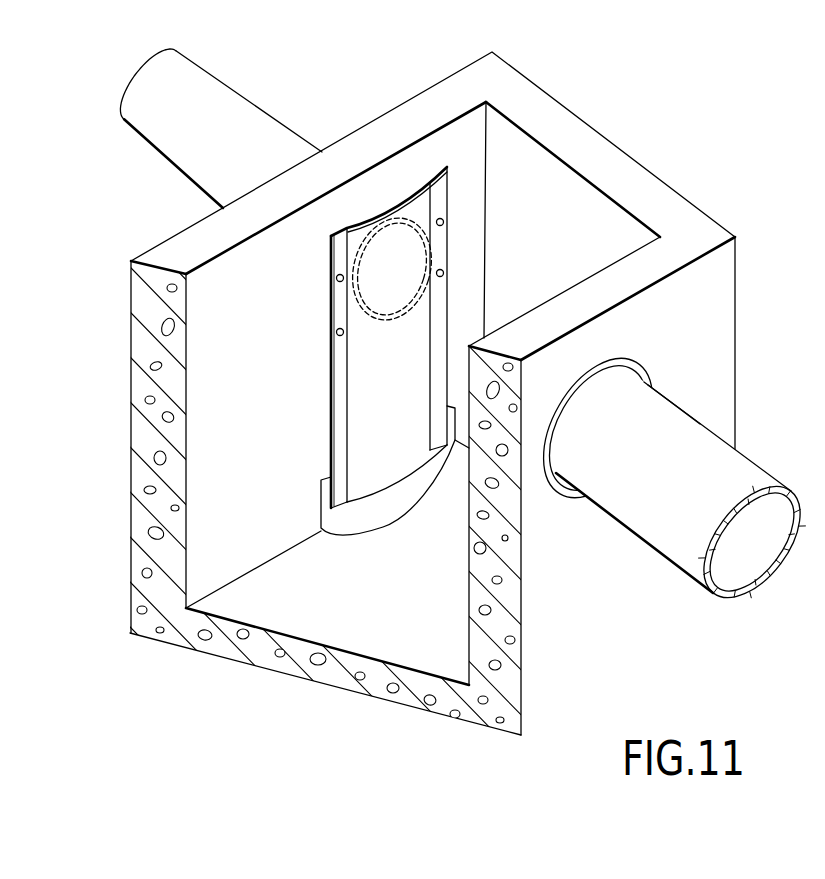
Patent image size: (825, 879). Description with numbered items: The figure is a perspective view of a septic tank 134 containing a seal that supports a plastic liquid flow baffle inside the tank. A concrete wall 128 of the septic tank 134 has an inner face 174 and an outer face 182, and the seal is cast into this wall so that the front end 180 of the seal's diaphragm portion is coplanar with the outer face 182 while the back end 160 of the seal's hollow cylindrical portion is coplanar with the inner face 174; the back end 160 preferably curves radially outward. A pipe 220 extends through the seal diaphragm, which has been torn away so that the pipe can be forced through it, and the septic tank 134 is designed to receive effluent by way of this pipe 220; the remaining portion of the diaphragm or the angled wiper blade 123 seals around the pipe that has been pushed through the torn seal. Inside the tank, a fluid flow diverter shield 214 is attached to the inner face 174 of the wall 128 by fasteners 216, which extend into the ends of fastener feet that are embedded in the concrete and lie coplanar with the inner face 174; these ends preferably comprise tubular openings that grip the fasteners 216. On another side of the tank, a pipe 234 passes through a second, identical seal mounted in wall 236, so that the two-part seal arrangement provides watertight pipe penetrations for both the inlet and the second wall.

The pipe 220 is at (228, 102).
The outer face 182 is at (153, 249).
The septic tank 134 is at (700, 235).
The wall 236 is at (716, 288).
The front end 180 is at (648, 358).
The angled wiper blade 123 is at (657, 382).
The pipe 234 is at (728, 477).
The concrete wall 128 is at (147, 352).
The inner face 174 is at (203, 542).
The fluid flow diverter shield 214 is at (382, 398).
The back end 160 is at (380, 322).
The fasteners 216 is at (443, 218).